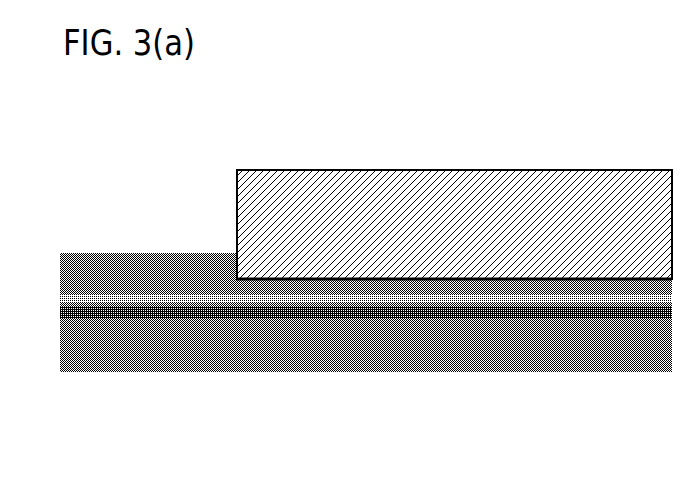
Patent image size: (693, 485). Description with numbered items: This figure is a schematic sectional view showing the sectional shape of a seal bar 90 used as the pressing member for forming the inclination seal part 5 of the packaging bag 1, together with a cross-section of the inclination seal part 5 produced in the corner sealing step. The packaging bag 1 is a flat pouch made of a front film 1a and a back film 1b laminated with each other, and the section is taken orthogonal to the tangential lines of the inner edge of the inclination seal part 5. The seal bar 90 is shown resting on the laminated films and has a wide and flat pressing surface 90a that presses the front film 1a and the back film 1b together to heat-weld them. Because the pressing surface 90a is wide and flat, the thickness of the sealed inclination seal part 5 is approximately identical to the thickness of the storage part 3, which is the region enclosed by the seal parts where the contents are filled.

The packaging bag 1 is at (366, 361).
The front film 1a is at (105, 326).
The back film 1b is at (130, 310).
The storage part 3 is at (104, 298).
The inclination seal part 5 is at (460, 308).
The seal bar 90 is at (450, 214).
The pressing surface 90a is at (313, 283).